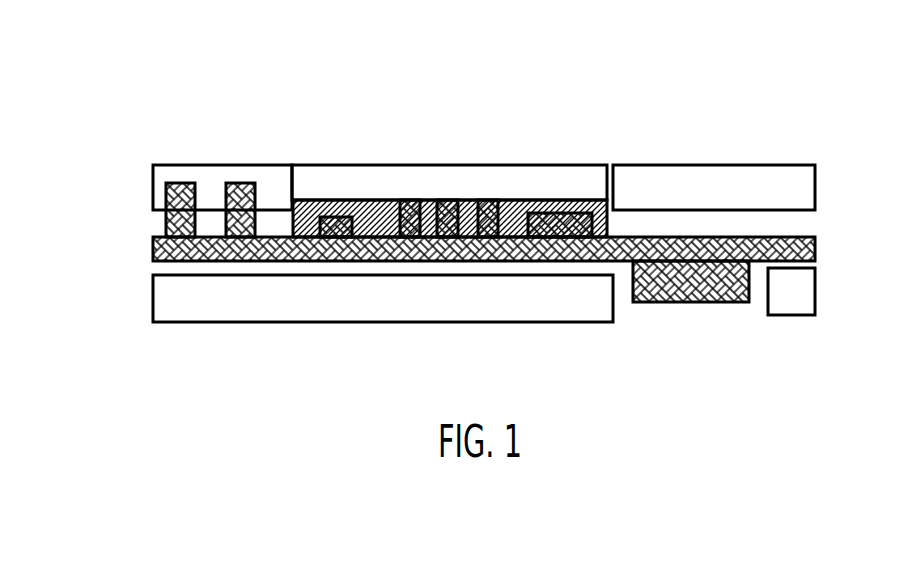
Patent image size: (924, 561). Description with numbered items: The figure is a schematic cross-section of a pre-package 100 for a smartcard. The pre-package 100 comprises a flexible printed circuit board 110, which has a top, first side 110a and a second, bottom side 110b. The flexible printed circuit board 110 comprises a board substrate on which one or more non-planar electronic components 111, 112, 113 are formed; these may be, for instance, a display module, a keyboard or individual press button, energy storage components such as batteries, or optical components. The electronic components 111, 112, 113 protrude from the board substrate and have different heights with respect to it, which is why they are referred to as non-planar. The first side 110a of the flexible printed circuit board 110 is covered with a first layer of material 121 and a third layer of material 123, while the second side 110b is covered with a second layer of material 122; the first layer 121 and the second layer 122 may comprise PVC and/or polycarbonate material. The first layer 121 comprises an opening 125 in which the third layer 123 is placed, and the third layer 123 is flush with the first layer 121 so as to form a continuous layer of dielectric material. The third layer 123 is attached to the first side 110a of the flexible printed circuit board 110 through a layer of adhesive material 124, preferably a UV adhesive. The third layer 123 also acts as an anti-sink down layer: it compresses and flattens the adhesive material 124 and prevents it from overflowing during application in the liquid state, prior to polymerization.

The pre-package 100 is at (88, 115).
The flexible printed circuit board 110 is at (530, 294).
The first side 110a is at (808, 228).
The second side 110b is at (798, 276).
The non-planar electronic component 111 is at (566, 211).
The non-planar electronic component 112 is at (693, 278).
The non-planar electronic component 113 is at (158, 223).
The first layer of material 121 is at (187, 160).
The second layer of material 122 is at (412, 303).
The third layer of material 123 is at (405, 165).
The layer of adhesive material 124 is at (513, 210).
The opening 125 is at (335, 200).